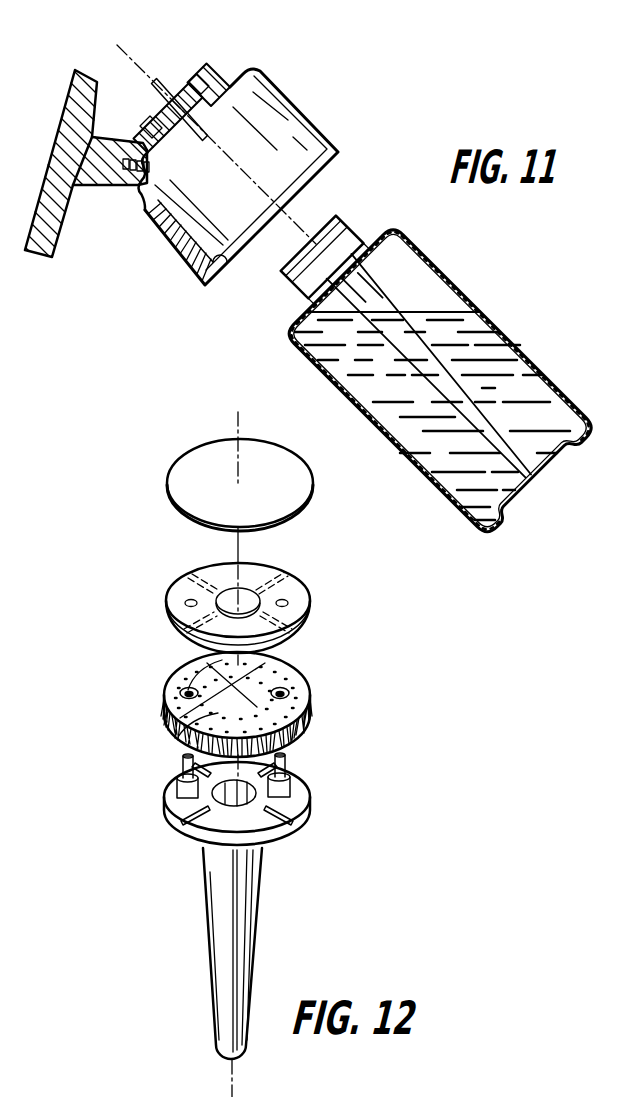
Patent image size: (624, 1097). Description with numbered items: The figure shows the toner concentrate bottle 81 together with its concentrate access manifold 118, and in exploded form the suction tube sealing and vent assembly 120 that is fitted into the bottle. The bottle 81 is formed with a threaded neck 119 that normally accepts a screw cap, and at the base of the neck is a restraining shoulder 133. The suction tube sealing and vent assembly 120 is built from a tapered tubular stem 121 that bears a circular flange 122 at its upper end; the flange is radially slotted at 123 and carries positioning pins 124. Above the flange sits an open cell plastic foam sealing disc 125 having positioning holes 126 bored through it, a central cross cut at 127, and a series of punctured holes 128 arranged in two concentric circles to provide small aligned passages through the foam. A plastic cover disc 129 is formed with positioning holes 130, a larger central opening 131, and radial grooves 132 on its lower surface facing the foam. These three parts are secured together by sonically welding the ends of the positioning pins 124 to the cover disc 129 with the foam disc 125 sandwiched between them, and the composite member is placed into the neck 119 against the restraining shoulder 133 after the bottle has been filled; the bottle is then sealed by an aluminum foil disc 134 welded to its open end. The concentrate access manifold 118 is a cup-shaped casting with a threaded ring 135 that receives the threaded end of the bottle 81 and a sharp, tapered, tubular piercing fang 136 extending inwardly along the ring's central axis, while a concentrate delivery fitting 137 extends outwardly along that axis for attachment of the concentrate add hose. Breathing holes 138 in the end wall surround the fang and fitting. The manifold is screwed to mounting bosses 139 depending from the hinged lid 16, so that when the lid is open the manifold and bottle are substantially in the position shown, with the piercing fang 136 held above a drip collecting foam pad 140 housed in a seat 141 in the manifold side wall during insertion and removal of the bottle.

In FIG. 11, the hinged lid 16 is at (75, 70).
In FIG. 11, the concentrate delivery fitting 137 is at (166, 77).
In FIG. 11, the breathing holes 138 is at (200, 78).
In FIG. 11, the threaded ring 135 is at (218, 78).
In FIG. 11, the concentrate access manifold 118 is at (309, 120).
In FIG. 11, the piercing fang 136 is at (201, 140).
In FIG. 11, the mounting bosses 139 is at (103, 186).
In FIG. 11, the seat 141 is at (157, 235).
In FIG. 11, the drip collecting foam pad 140 is at (224, 268).
In FIG. 11, the threaded neck 119 is at (340, 219).
In FIG. 11, the toner concentrate bottle 81 is at (460, 290).
In FIG. 11, the restraining shoulder 133 is at (370, 255).
In FIG. 12, the aluminum foil disc 134 is at (197, 455).
In FIG. 12, the central opening 131 is at (243, 590).
In FIG. 12, the radial grooves 132 is at (284, 574).
In FIG. 12, the positioning holes 130 is at (190, 600).
In FIG. 12, the plastic cover disc 129 is at (234, 586).
In FIG. 12, the central cross cut 127 is at (287, 665).
In FIG. 12, the holes 128 is at (178, 676).
In FIG. 12, the positioning holes 126 is at (182, 700).
In FIG. 12, the open cell plastic foam sealing disc 125 is at (229, 707).
In FIG. 12, the suction tube sealing and vent assembly 120 is at (264, 906).
In FIG. 12, the positioning pins 124 is at (176, 788).
In FIG. 12, the circular flange 122 is at (308, 800).
In FIG. 12, the radial slots 123 is at (289, 824).
In FIG. 12, the tapered tubular stem 121 is at (242, 950).